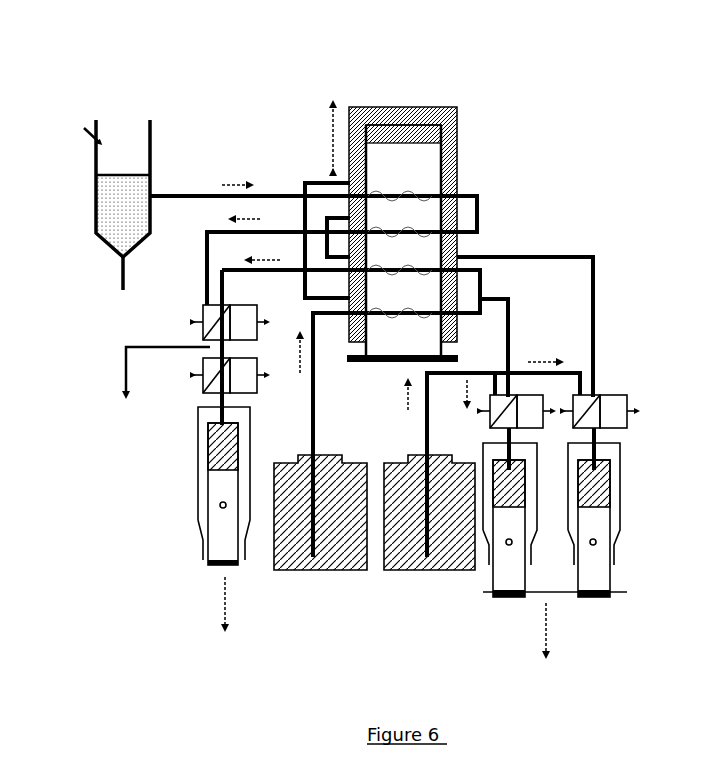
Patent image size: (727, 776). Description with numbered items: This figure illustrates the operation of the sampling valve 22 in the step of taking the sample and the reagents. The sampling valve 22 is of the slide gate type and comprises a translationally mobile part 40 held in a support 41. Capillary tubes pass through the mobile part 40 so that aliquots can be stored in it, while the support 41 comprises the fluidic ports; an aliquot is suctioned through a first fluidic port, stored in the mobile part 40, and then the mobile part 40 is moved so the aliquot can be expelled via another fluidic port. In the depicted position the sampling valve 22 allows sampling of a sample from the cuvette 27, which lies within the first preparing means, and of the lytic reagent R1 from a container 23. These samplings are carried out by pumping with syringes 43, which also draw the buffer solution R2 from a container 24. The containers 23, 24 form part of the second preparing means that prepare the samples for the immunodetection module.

The sampling valve 22 is at (413, 106).
The container 23 is at (340, 570).
The container 24 is at (416, 570).
The cuvette 27 is at (122, 148).
The mobile part 40 is at (428, 167).
The support 41 is at (445, 145).
The syringes 43 is at (207, 541).